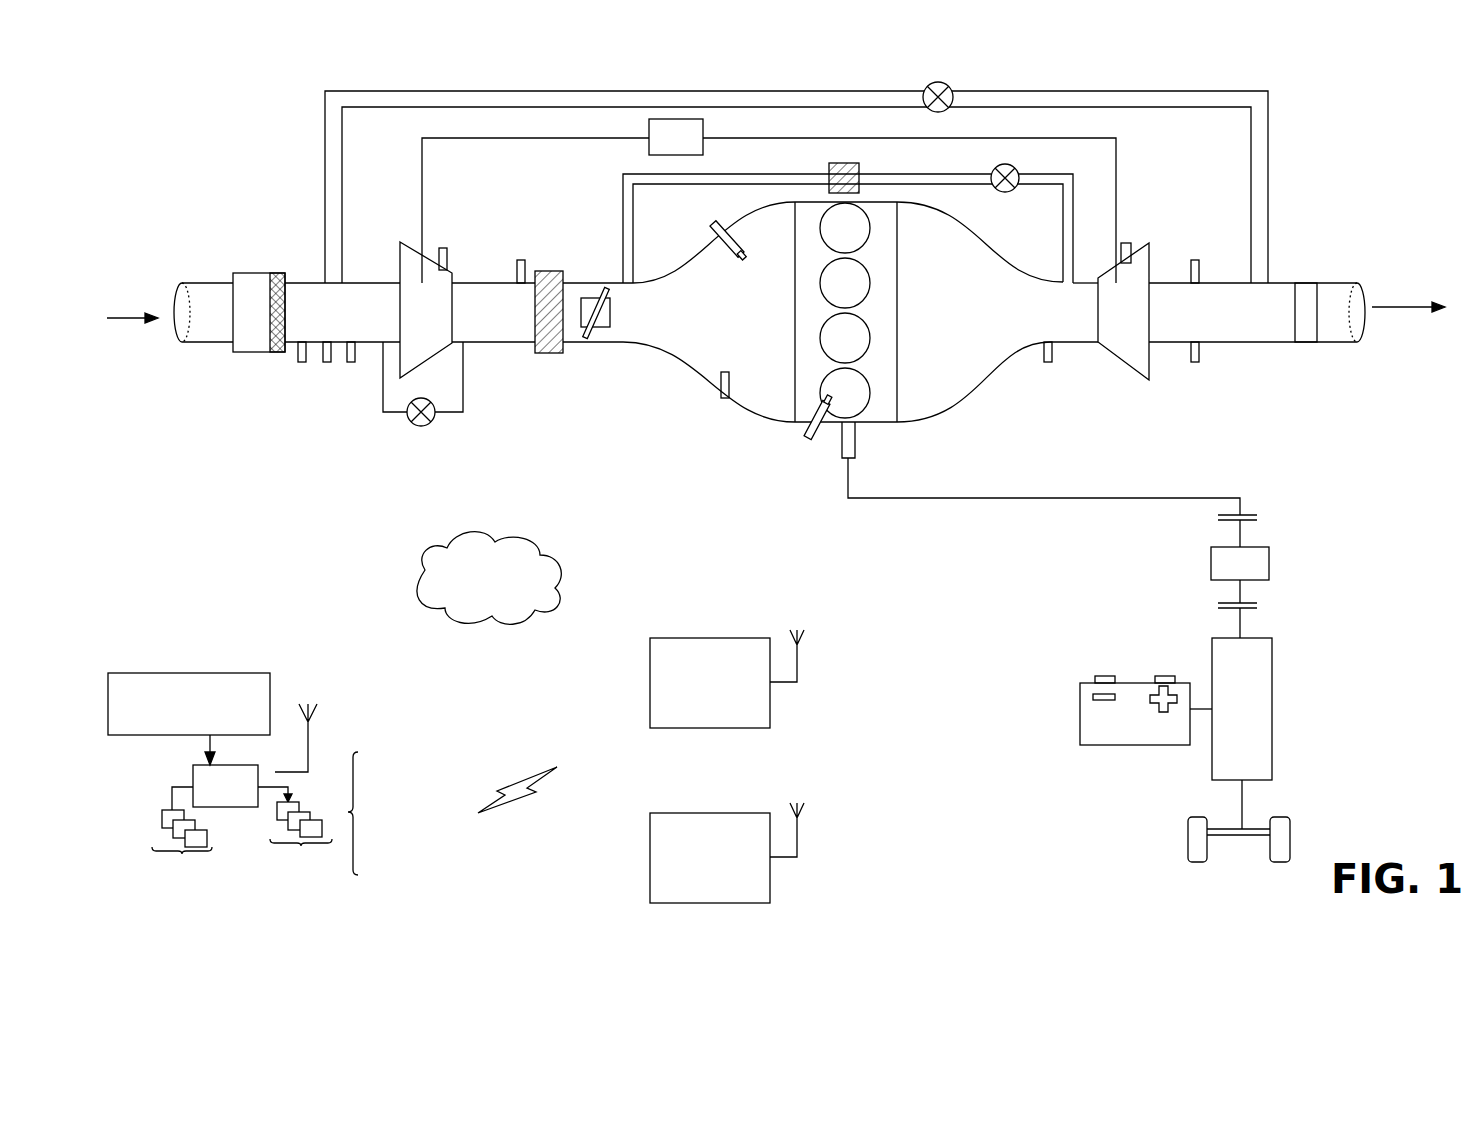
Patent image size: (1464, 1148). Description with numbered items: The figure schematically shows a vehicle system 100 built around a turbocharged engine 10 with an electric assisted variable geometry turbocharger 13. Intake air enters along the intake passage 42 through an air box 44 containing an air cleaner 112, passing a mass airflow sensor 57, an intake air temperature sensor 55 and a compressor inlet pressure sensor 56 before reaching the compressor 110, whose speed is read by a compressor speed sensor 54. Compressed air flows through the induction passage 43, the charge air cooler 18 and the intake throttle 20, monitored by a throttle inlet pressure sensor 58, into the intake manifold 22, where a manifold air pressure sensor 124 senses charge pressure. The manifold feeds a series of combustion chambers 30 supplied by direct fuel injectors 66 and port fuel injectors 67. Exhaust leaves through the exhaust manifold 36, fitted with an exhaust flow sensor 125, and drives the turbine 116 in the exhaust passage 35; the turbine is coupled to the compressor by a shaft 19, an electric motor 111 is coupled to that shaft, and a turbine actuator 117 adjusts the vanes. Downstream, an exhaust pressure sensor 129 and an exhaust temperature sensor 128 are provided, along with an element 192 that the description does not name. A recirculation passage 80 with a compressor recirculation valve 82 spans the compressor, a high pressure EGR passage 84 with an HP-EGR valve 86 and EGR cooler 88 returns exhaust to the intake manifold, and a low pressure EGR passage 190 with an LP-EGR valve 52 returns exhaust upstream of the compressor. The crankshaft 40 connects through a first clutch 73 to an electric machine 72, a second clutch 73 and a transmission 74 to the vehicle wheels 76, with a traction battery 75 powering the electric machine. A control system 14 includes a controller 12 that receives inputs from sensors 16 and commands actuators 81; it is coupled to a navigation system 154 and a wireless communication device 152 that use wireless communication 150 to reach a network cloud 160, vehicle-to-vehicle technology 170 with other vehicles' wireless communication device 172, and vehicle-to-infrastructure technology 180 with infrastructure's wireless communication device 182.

The vehicle system 100 is at (1384, 206).
The engine 10 is at (724, 340).
The controller 12 is at (215, 796).
The turbocharger 13 is at (1154, 288).
The control system 14 is at (273, 786).
The sensors 16 is at (181, 843).
The charge air cooler 18 is at (548, 272).
The shaft 19 is at (1062, 138).
The intake throttle 20 is at (611, 320).
The intake manifold 22 is at (746, 318).
The combustion chambers 30 is at (862, 220).
The exhaust passage 35 is at (1333, 283).
The exhaust manifold 36 is at (957, 321).
The crankshaft 40 is at (855, 450).
The intake passage 42 is at (190, 350).
The induction passage 43 is at (468, 283).
The air box 44 is at (247, 352).
The LP-EGR valve 52 is at (947, 83).
The compressor speed sensor 54 is at (443, 248).
The intake air temperature sensor 55 is at (327, 362).
The compressor inlet pressure sensor 56 is at (351, 362).
The mass airflow sensor 57 is at (302, 362).
The throttle inlet pressure sensor 58 is at (521, 260).
The direct fuel injector 66 is at (807, 435).
The port fuel injector 67 is at (718, 217).
The electric machine 72 is at (1211, 560).
The clutch 73 is at (1255, 517).
The transmission 74 is at (1231, 723).
The traction battery 75 is at (1142, 682).
The vehicle wheels 76 is at (1182, 842).
The recirculation passage 80 is at (465, 398).
The actuators 81 is at (300, 840).
The compressor recirculation valve 82 is at (418, 428).
The high pressure EGR passage 84 is at (657, 184).
The HP-EGR valve 86 is at (1003, 193).
The EGR cooler 88 is at (843, 163).
The compressor 110 is at (410, 318).
The electric motor 111 is at (703, 127).
The air cleaner 112 is at (278, 273).
The turbine 116 is at (1106, 323).
The turbine actuator 117 is at (1127, 243).
The manifold air pressure sensor 124 is at (725, 398).
The exhaust flow sensor 125 is at (1046, 362).
The exhaust temperature sensor 128 is at (1195, 362).
The exhaust pressure sensor 129 is at (1198, 260).
The wireless communication 150 is at (557, 767).
The wireless communication device 152 is at (323, 740).
The navigation system 154 is at (189, 719).
The network cloud 160 is at (467, 628).
The vehicle-to-vehicle technology 170 is at (710, 683).
The wireless communication device 172 is at (790, 685).
The vehicle-to-infrastructure technology 180 is at (710, 858).
The wireless communication device 182 is at (790, 860).
The low pressure EGR passage 190 is at (1138, 107).
The emission control device 192 is at (1307, 342).